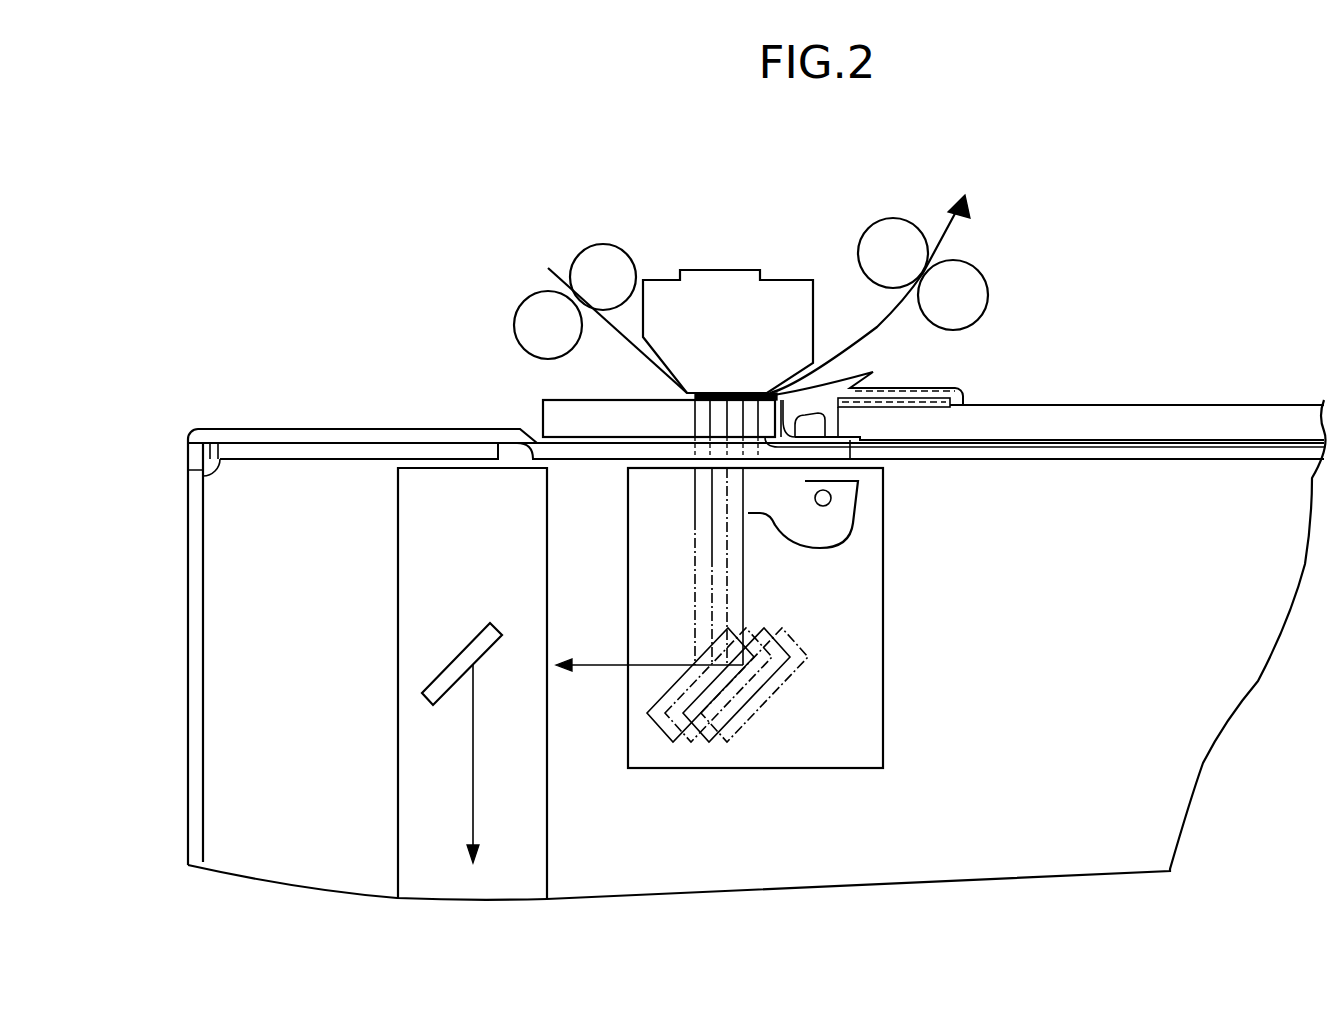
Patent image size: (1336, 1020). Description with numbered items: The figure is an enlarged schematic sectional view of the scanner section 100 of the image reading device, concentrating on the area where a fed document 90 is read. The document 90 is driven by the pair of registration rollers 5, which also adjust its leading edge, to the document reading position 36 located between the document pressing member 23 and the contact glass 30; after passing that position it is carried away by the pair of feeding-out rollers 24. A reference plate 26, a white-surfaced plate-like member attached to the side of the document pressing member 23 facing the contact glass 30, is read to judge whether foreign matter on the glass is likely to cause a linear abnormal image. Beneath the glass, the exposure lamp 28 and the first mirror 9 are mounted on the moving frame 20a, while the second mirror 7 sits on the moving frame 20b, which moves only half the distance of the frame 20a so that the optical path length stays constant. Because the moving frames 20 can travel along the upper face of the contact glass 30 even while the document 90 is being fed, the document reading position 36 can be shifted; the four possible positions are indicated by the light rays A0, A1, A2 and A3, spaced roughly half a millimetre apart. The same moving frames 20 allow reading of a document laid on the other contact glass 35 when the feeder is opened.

The scanner section 100 is at (187, 640).
The moving frames 20 is at (950, 599).
The moving frame 20a is at (885, 695).
The moving frame 20b is at (397, 640).
The document pressing member 23 is at (715, 287).
The reference plate 26 is at (730, 393).
The document reading position 36 is at (747, 393).
The contact glass 30 is at (573, 423).
The contact glass 35 is at (1180, 425).
The pair of registration rollers 5 is at (590, 258).
The pair of feeding-out rollers 24 is at (952, 312).
The document 90 is at (945, 230).
The exposure lamp 28 is at (853, 520).
The second mirror 7 is at (463, 643).
The first mirror 9 is at (740, 740).
The light ray at document reading position A0 is at (743, 585).
The light ray at document reading position A1 is at (727, 503).
The light ray at document reading position A2 is at (712, 557).
The light ray at document reading position A3 is at (695, 605).